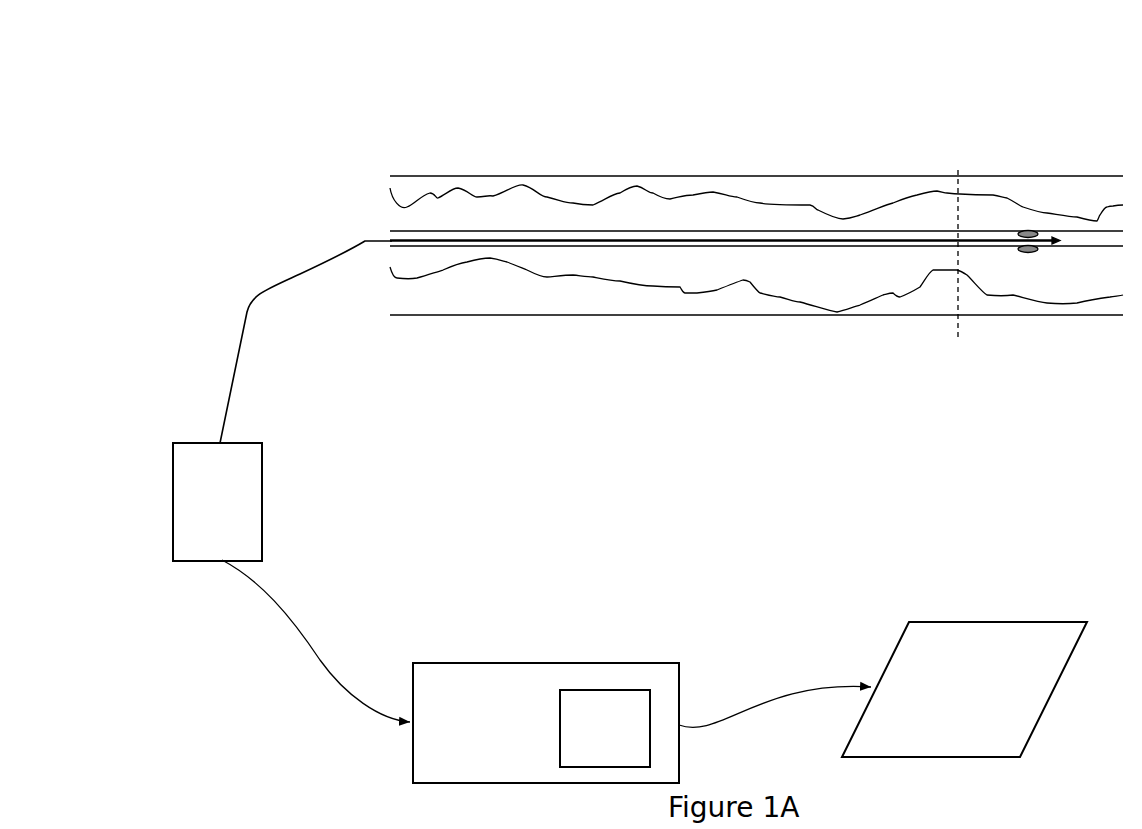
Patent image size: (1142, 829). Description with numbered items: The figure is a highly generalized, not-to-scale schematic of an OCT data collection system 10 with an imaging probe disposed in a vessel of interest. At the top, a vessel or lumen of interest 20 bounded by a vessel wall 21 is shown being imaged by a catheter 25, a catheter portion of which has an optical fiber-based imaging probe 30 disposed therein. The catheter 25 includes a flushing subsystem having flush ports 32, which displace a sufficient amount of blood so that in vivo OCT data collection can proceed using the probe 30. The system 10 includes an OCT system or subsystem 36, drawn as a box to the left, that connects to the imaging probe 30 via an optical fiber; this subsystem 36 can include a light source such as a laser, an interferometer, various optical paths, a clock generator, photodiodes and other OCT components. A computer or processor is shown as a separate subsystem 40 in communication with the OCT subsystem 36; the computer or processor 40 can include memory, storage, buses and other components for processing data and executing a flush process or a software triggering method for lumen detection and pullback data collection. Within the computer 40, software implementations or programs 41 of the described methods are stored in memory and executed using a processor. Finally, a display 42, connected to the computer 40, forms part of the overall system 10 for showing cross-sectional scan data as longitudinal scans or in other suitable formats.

The OCT system 10 is at (428, 137).
The vessel or lumen of interest 20 is at (661, 274).
The vessel wall 21 is at (783, 203).
The catheter 25 is at (595, 248).
The optical fiber-based imaging probe 30 is at (378, 243).
The flush ports 32 is at (1023, 255).
The OCT system or subsystem 36 is at (265, 486).
The computer or processor 40 is at (540, 658).
The software implementations or programs 41 is at (627, 687).
The display 42 is at (982, 617).